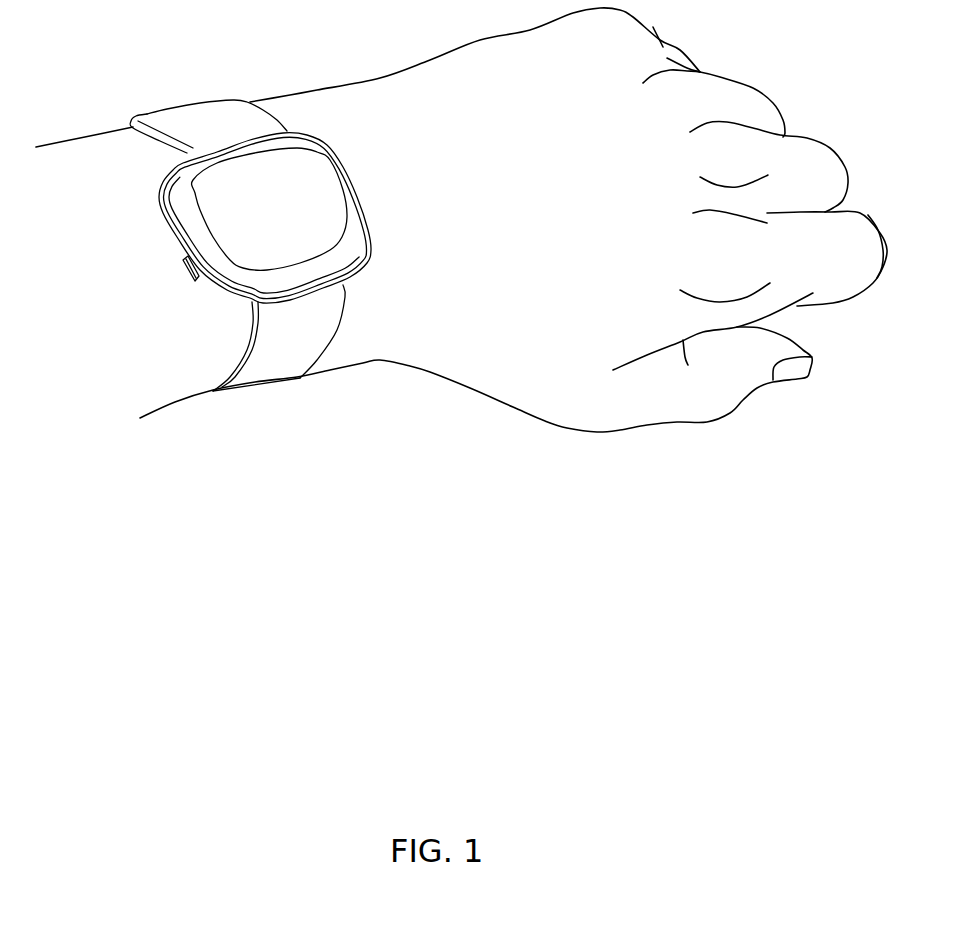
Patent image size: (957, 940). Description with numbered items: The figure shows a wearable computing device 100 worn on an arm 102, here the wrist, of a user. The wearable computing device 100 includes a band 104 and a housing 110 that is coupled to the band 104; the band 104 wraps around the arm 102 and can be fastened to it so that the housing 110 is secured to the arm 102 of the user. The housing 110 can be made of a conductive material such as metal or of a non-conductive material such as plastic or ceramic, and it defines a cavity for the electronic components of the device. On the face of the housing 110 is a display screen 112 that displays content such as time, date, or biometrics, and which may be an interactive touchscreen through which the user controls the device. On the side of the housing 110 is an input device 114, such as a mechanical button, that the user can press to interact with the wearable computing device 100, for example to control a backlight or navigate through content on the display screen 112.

The wearable computing device 100 is at (273, 261).
The arm 102 is at (368, 350).
The band 104 is at (227, 110).
The housing 110 is at (217, 302).
The display screen 112 is at (313, 192).
The input device 114 is at (192, 270).